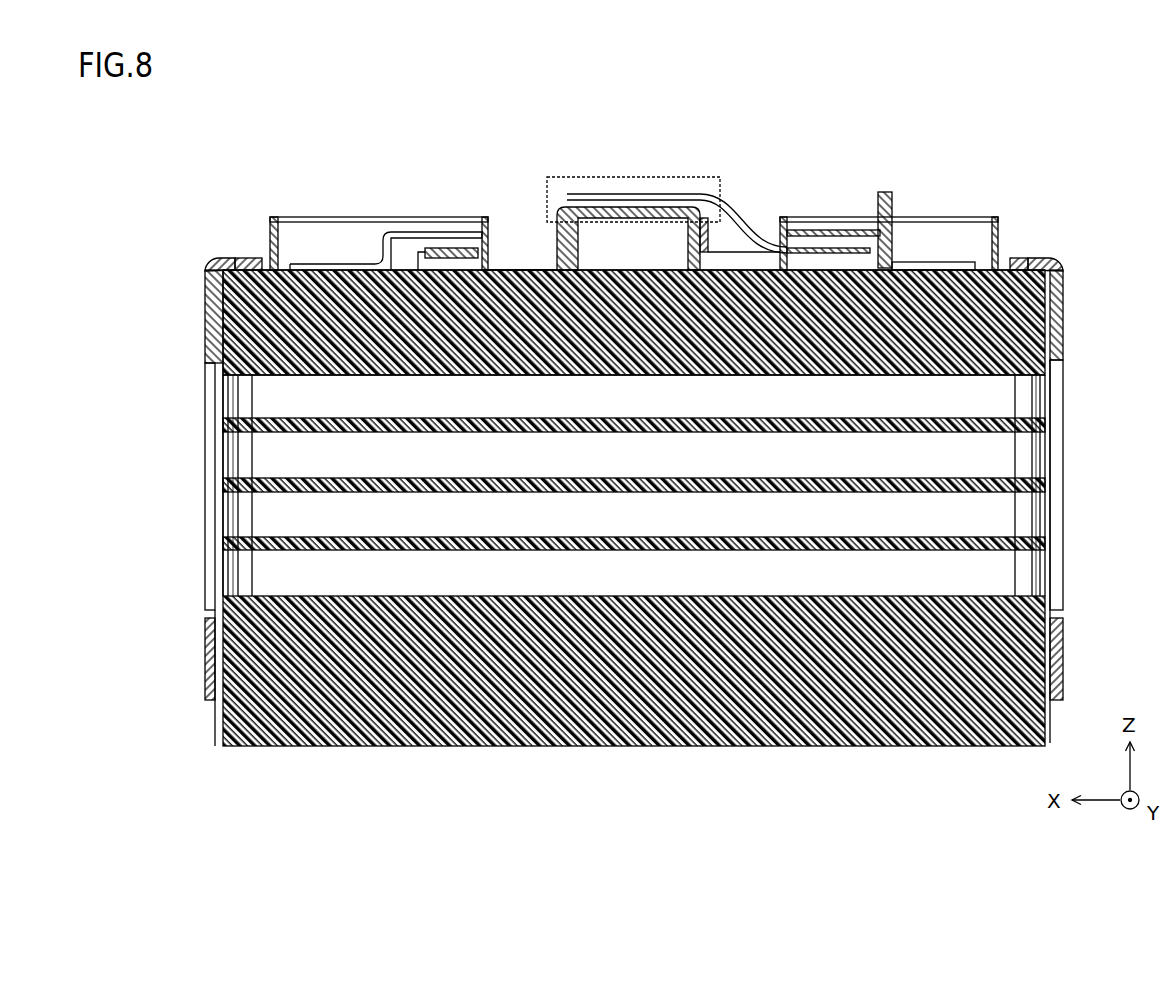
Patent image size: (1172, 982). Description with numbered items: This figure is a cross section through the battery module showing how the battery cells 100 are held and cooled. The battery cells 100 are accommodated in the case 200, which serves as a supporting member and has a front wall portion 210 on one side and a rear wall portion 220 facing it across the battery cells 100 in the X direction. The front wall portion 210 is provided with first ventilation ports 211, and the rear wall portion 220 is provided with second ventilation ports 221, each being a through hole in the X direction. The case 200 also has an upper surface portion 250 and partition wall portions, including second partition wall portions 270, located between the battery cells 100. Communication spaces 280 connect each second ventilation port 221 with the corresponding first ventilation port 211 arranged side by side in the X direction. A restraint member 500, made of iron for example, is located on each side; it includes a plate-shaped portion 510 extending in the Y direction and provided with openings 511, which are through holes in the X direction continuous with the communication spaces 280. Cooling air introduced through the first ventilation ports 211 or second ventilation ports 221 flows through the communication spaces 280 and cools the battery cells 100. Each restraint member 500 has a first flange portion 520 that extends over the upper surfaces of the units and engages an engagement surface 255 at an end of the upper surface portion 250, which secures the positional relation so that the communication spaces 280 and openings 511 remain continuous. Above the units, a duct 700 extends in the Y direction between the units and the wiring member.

The battery cell 100 is at (1000, 512).
The case 200 is at (222, 612).
The front wall portion 210 is at (1040, 572).
The first ventilation port 211 is at (1045, 387).
The rear wall portion 220 is at (232, 572).
The second ventilation port 221 is at (228, 400).
The upper surface portion 250 is at (508, 268).
The engagement surface 255 is at (228, 262).
The second partition wall portion 270 is at (550, 318).
The communication space 280 is at (987, 400).
The restraint member 500 is at (634, 463).
The plate-shaped portion 510 is at (207, 300).
The opening 511 is at (207, 350).
The first flange portion 520 is at (248, 262).
The duct 700 is at (628, 207).